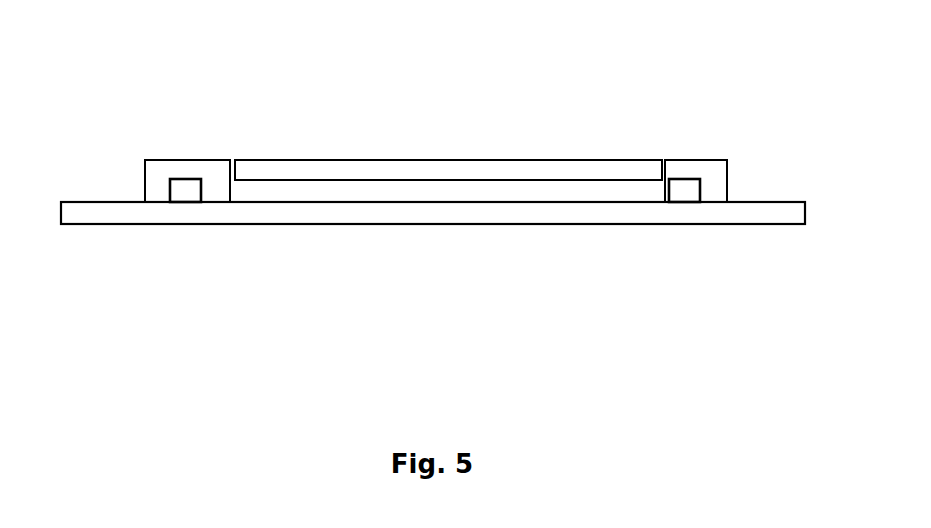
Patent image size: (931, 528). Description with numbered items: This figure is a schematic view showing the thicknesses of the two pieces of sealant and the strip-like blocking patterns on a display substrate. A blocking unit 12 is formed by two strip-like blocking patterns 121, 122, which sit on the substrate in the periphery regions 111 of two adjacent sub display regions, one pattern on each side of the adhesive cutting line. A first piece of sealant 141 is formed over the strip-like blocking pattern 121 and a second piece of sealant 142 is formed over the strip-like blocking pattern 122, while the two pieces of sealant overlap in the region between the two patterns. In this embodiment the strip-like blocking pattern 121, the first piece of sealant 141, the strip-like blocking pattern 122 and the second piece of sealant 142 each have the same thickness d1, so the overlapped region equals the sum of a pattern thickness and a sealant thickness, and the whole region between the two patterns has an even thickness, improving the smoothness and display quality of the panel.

The periphery region 111 is at (806, 233).
The blocking unit 12 is at (432, 288).
The strip-like blocking pattern 121 is at (187, 188).
The strip-like blocking pattern 122 is at (705, 255).
The first piece of sealant 141 is at (142, 160).
The second piece of sealant 142 is at (732, 160).
The thickness d1 is at (266, 213).